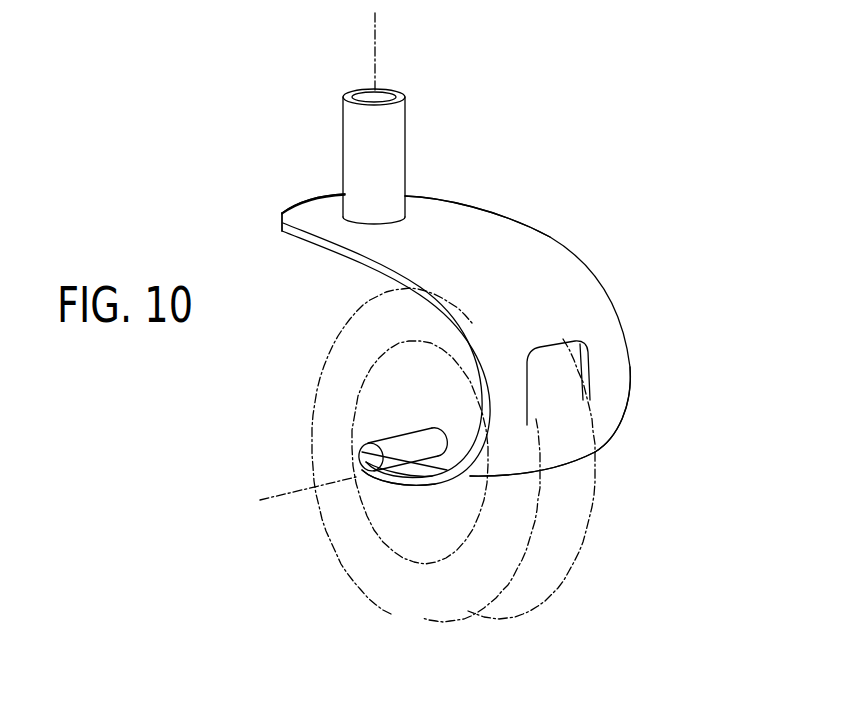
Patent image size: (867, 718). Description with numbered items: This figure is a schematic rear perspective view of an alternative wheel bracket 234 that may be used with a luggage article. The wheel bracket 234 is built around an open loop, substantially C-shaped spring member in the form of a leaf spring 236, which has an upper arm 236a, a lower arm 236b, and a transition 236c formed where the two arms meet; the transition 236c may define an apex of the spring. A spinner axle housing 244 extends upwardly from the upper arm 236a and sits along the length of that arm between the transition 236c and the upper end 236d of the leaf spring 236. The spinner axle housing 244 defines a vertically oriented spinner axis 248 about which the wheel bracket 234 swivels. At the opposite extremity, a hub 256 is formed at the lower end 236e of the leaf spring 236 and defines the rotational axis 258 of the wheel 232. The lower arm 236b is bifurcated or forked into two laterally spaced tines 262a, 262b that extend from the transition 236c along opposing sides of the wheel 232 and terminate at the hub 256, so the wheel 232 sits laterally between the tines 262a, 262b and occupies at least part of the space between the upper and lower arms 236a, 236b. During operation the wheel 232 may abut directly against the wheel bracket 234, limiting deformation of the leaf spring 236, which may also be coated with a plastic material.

The wheel 232 is at (563, 535).
The wheel bracket 234 is at (282, 228).
The leaf spring 236 is at (600, 283).
The upper arm 236a is at (433, 223).
The lower arm 236b is at (427, 480).
The transition 236c is at (632, 380).
The upper end 236d is at (303, 205).
The lower end 236e is at (385, 475).
The spinner axle housing 244 is at (347, 157).
The spinner axis 248 is at (375, 55).
The hub 256 is at (405, 445).
The rotational axis 258 is at (300, 490).
The tine 262a is at (603, 407).
The tine 262b is at (492, 447).